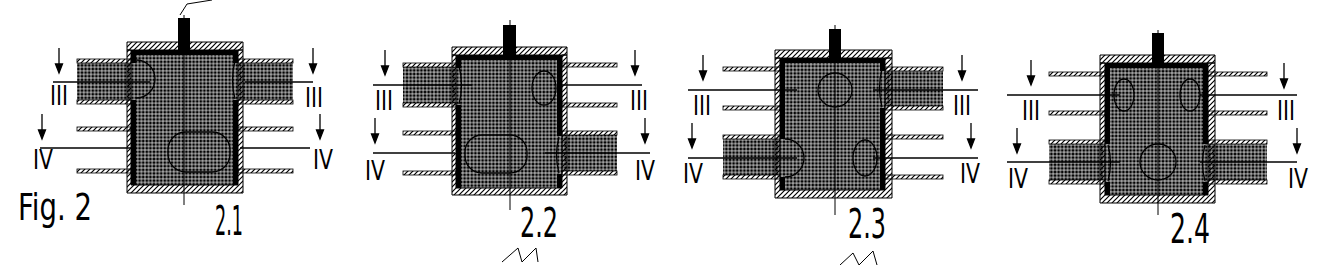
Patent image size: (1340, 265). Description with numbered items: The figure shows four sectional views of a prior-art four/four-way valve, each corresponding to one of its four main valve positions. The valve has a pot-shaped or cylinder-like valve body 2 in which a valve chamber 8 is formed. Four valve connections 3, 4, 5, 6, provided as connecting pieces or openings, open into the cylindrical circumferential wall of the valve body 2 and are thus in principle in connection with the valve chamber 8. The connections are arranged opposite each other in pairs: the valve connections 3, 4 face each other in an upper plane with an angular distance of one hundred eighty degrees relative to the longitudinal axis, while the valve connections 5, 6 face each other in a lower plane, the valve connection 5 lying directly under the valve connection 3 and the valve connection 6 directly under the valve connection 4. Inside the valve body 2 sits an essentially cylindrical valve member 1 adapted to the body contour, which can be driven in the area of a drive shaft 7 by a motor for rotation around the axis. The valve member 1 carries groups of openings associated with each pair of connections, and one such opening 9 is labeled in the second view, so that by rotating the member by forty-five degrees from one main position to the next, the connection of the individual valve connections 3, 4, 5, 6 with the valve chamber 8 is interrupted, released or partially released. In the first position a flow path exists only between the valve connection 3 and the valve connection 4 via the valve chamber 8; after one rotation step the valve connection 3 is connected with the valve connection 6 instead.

In FIG. 2.1, the valve member 1 is at (185, 145).
In FIG. 2.2, the valve member 1 is at (509, 150).
In FIG. 2.3, the valve member 1 is at (833, 151).
In FIG. 2.4, the valve member 1 is at (1157, 157).
In FIG. 2.1, the valve body 2 is at (192, 34).
In FIG. 2.2, the valve body 2 is at (509, 27).
In FIG. 2.3, the valve body 2 is at (848, 42).
In FIG. 2.4, the valve body 2 is at (1168, 47).
In FIG. 2.1, the valve connection 3 is at (104, 54).
In FIG. 2.2, the valve connection 3 is at (429, 59).
In FIG. 2.3, the valve connection 3 is at (751, 63).
In FIG. 2.4, the valve connection 3 is at (1077, 69).
In FIG. 2.1, the valve connection 4 is at (265, 55).
In FIG. 2.2, the valve connection 4 is at (589, 59).
In FIG. 2.3, the valve connection 4 is at (914, 64).
In FIG. 2.4, the valve connection 4 is at (1237, 69).
In FIG. 2.1, the valve connection 5 is at (104, 177).
In FIG. 2.2, the valve connection 5 is at (429, 182).
In FIG. 2.3, the valve connection 5 is at (751, 186).
In FIG. 2.4, the valve connection 5 is at (1077, 191).
In FIG. 2.1, the valve connection 6 is at (265, 178).
In FIG. 2.2, the valve connection 6 is at (589, 183).
In FIG. 2.3, the valve connection 6 is at (914, 186).
In FIG. 2.4, the valve connection 6 is at (1237, 191).
In FIG. 2.1, the drive shaft 7 is at (175, 102).
In FIG. 2.2, the drive shaft 7 is at (486, 114).
In FIG. 2.3, the drive shaft 7 is at (809, 118).
In FIG. 2.4, the drive shaft 7 is at (1132, 120).
In FIG. 2.1, the valve chamber 8 is at (184, 145).
In FIG. 2.2, the valve chamber 8 is at (509, 151).
In FIG. 2.3, the valve chamber 8 is at (832, 155).
In FIG. 2.4, the valve chamber 8 is at (1156, 159).
In FIG. 2.2, the flow channel 9 is at (549, 60).